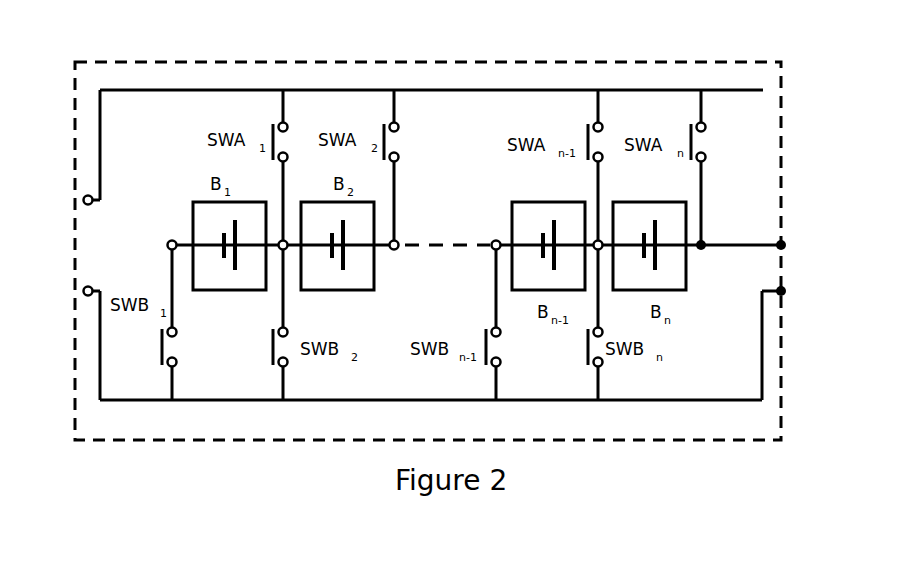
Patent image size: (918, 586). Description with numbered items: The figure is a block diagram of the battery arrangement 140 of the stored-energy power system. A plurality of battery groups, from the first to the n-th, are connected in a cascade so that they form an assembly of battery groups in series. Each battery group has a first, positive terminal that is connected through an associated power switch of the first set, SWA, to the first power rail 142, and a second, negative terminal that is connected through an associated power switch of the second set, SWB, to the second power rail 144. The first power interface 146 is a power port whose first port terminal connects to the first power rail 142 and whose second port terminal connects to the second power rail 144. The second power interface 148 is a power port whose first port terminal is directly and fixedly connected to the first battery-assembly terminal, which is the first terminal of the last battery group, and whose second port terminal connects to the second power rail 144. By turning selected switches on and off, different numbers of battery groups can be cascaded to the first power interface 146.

The battery arrangement 140 is at (68, 38).
The first power rail 142 is at (447, 90).
The second power rail 144 is at (651, 399).
The first power interface 146 is at (101, 245).
The second power interface 148 is at (743, 320).